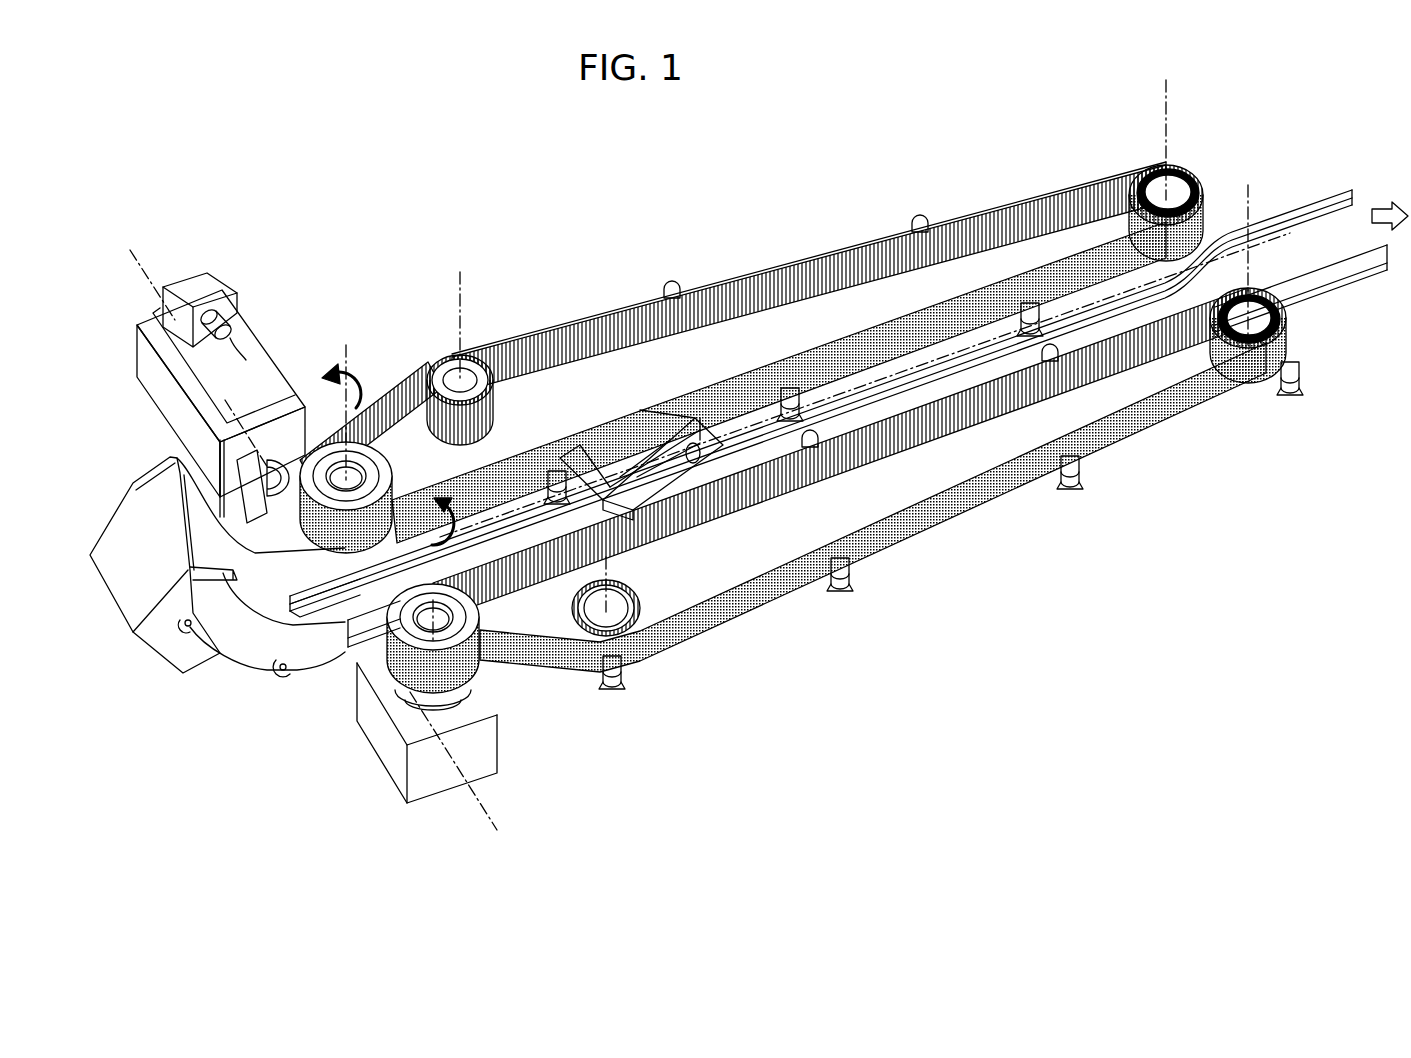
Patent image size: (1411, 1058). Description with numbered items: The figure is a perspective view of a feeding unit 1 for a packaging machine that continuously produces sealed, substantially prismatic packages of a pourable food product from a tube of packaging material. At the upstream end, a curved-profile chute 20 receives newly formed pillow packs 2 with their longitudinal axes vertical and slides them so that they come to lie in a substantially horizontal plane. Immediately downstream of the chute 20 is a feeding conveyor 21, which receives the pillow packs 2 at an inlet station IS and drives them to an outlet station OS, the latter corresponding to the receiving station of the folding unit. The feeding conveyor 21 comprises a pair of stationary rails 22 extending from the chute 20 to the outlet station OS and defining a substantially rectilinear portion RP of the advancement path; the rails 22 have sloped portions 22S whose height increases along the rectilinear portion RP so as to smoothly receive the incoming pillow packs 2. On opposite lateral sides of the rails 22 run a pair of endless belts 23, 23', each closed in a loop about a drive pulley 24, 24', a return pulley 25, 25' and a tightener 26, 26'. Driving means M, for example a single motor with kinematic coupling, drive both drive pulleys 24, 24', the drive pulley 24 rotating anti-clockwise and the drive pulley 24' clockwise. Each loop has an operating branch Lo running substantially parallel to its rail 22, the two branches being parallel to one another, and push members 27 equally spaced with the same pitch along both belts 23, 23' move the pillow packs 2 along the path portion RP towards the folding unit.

The feeding unit 1 is at (335, 183).
The pillow packs 2 is at (652, 458).
The curved-profile chute 20 is at (235, 640).
The feeding conveyor 21 is at (503, 315).
The stationary rails 22 is at (1270, 240).
The sloped portions 22S is at (375, 605).
The endless belt 23 is at (751, 357).
The endless belt 23' is at (836, 490).
The drive pulley 24 is at (346, 414).
The drive pulley 24' is at (351, 540).
The return pulley 25 is at (1148, 148).
The return pulley 25' is at (1305, 329).
The tightener 26 is at (449, 358).
The tightener 26' is at (641, 640).
The push members 27 is at (1035, 296).
The driving means M is at (215, 290).
The inlet station IS is at (332, 628).
The outlet station OS is at (1350, 235).
The rectilinear portion RP is at (1248, 190).
The operating branch Lo is at (770, 540).